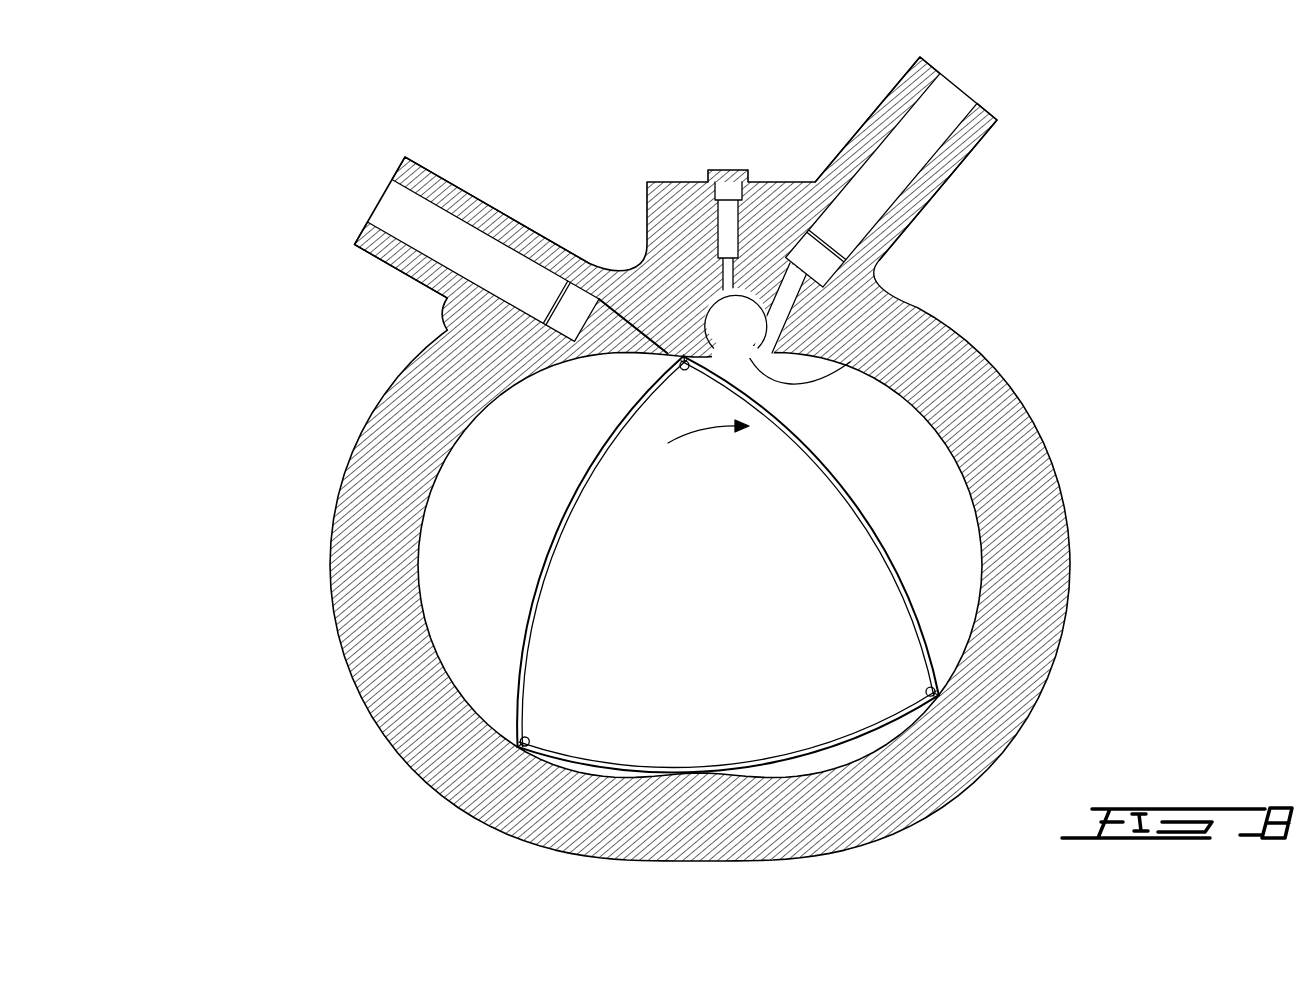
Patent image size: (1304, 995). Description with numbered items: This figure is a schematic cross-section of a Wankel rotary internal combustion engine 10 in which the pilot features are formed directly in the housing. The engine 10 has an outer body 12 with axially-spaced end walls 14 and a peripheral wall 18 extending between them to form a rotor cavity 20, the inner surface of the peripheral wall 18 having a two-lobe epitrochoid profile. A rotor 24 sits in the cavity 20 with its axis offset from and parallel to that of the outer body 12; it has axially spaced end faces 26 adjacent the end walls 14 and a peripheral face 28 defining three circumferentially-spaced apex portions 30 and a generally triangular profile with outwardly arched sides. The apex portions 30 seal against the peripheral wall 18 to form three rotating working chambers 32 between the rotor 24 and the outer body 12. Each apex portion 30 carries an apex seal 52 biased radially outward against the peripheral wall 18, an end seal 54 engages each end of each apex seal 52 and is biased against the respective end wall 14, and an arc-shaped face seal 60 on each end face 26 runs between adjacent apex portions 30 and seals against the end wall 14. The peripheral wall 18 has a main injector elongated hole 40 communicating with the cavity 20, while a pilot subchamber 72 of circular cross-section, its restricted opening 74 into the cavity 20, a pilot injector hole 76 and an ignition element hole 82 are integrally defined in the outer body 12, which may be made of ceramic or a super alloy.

The engine 10 is at (228, 322).
The outer body 12 is at (714, 438).
The end walls 14 is at (925, 490).
The peripheral wall 18 is at (385, 555).
The rotor cavity 20 is at (717, 569).
The rotor 24 is at (717, 569).
The end faces 26 is at (867, 672).
The peripheral face 28 is at (530, 635).
The apex portions 30 is at (957, 702).
The working chambers 32 is at (503, 513).
The main injector elongated hole 40 is at (403, 205).
The apex seal 52 is at (533, 750).
The end seal 54 is at (500, 822).
The face seal 60 is at (808, 450).
The pilot subchamber 72 is at (730, 317).
The opening 74 is at (853, 350).
The pilot injector hole 76 is at (945, 108).
The ignition element hole 82 is at (727, 187).